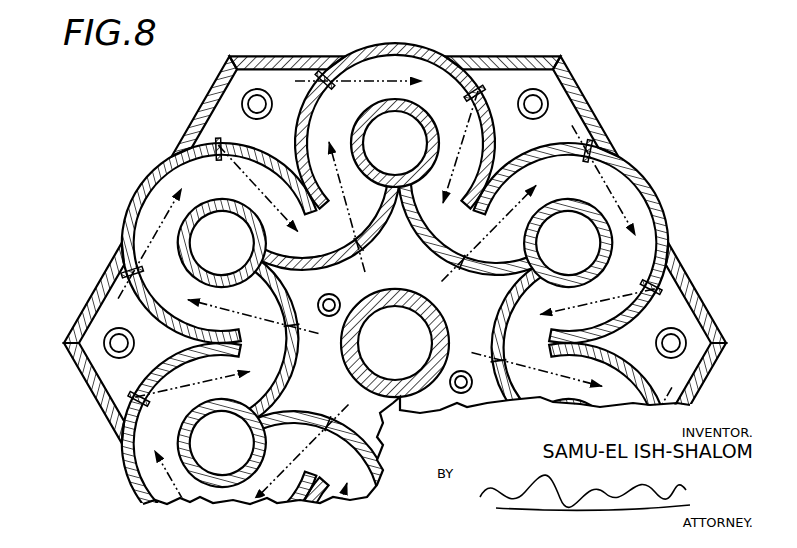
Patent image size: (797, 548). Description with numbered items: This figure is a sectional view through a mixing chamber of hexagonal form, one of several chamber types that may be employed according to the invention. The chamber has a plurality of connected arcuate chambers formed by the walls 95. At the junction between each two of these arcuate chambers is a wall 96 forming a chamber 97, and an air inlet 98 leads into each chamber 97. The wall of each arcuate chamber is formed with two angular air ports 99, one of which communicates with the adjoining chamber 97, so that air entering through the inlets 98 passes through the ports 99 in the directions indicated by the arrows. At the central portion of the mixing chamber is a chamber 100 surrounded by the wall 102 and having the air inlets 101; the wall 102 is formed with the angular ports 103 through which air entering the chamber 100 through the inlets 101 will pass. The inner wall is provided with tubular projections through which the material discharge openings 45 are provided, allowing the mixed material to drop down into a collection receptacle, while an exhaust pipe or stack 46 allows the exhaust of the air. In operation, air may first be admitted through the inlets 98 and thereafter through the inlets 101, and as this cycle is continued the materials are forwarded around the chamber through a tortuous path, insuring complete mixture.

The central opening 45 is at (395, 323).
The exhaust pipe or stack 46 is at (395, 343).
The walls of arcuate chambers 95 is at (408, 46).
The wall 96 is at (194, 140).
The chamber 97 is at (233, 86).
The air inlet 98 is at (243, 103).
The angular air ports 99 is at (329, 83).
The central chamber 100 is at (405, 273).
The air inlets 101 is at (334, 301).
The wall 102 is at (452, 256).
The angular ports 103 is at (355, 242).